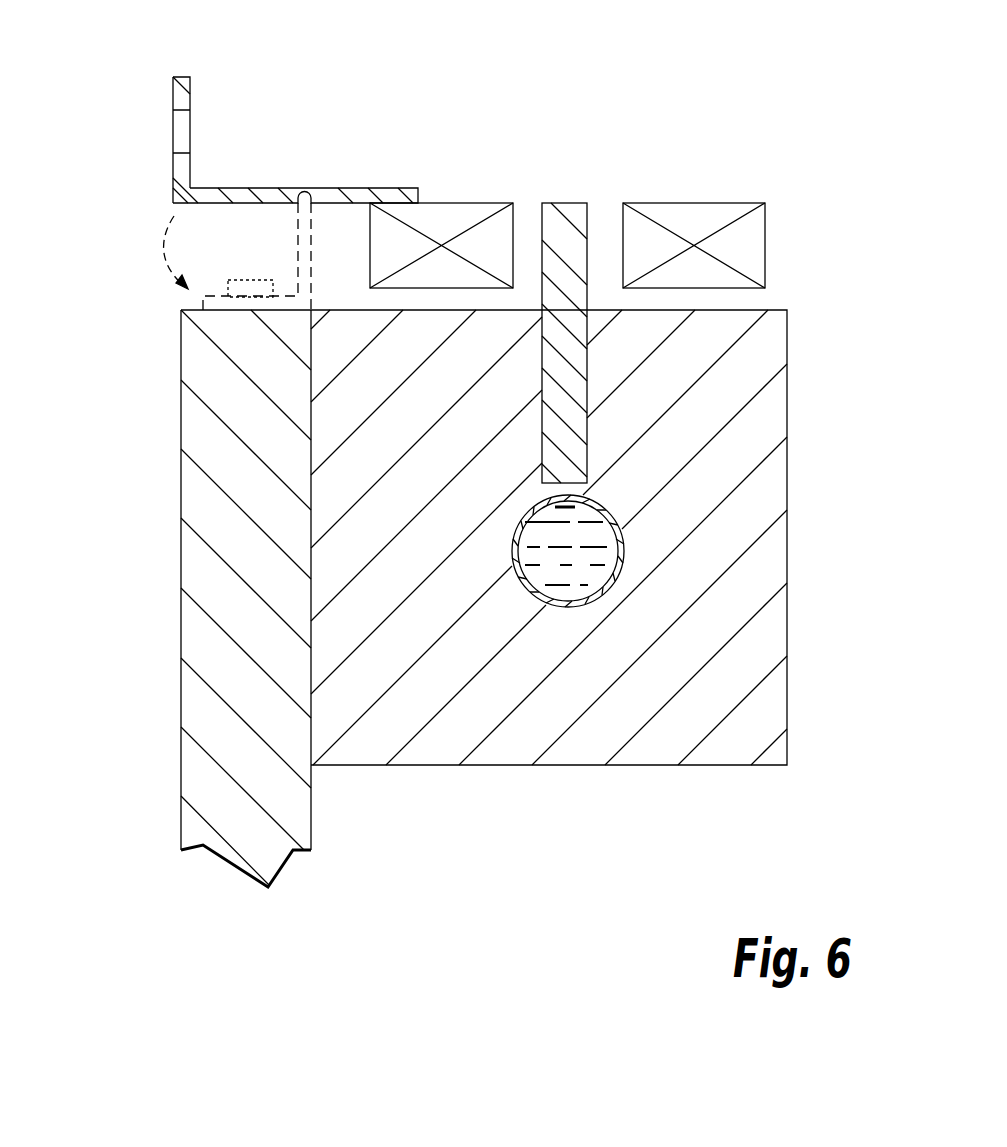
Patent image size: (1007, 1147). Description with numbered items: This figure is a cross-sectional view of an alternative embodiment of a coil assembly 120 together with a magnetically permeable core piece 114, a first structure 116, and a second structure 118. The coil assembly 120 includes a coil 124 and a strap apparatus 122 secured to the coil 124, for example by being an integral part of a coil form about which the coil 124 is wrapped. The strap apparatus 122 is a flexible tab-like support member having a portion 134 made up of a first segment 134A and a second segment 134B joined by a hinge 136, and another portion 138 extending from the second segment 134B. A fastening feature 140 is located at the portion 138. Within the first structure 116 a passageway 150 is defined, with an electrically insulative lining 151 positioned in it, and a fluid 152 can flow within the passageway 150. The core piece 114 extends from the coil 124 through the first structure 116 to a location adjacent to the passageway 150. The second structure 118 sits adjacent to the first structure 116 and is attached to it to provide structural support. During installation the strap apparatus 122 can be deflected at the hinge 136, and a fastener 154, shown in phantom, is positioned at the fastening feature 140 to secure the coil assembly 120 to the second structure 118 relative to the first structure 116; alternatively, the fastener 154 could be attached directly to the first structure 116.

The magnetically permeable core piece 114 is at (562, 202).
The first structure 116 is at (767, 420).
The second structure 118 is at (190, 413).
The coil assembly 120 is at (771, 179).
The strap apparatus 122 is at (330, 189).
The coil 124 is at (463, 218).
The portion 134 is at (422, 185).
The first segment 134A is at (379, 193).
The second segment 134B is at (240, 197).
The hinge 136 is at (298, 198).
The portion 138 is at (181, 99).
The fastening feature 140 is at (180, 131).
The passageway 150 is at (606, 504).
The electrically insulative lining 151 is at (623, 563).
The fluid 152 is at (558, 583).
The fastener 154 is at (253, 232).